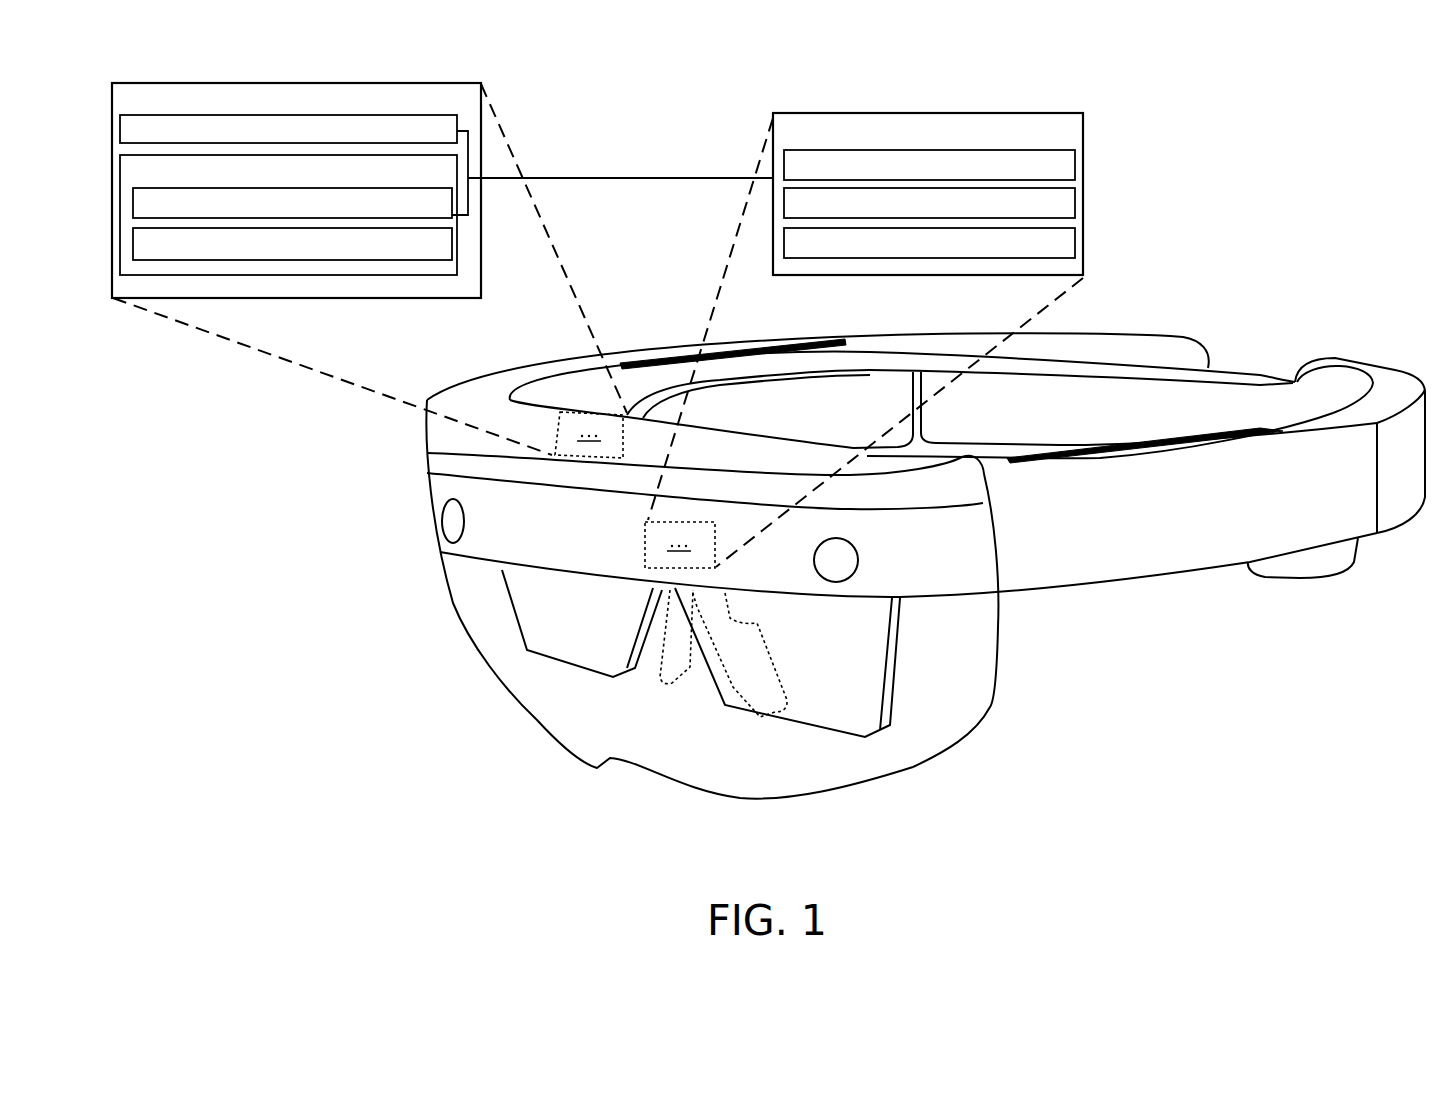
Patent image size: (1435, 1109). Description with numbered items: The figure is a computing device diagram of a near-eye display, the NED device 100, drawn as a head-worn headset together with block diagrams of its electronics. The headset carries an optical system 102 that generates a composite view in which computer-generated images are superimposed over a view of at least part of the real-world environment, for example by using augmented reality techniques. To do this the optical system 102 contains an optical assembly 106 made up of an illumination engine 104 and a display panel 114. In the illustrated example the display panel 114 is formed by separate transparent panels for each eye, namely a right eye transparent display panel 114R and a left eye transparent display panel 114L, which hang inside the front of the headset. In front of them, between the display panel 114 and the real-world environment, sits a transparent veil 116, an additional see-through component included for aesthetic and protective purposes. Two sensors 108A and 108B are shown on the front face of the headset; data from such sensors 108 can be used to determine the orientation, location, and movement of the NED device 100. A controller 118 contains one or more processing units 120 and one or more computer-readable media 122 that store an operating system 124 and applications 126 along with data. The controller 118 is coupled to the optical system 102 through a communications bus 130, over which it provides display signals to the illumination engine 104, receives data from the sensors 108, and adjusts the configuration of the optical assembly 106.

The NED device 100 is at (1258, 346).
The optical system 102 is at (928, 194).
The illumination engine 104 is at (929, 165).
The optical assembly 106 is at (929, 203).
The sensors 108 is at (929, 243).
The sensor 108A is at (448, 520).
The sensor 108B is at (850, 552).
The display panel 114 is at (762, 714).
The left eye transparent display panel 114L is at (840, 692).
The right eye transparent display panel 114R is at (575, 633).
The transparent veil 116 is at (472, 610).
The controller 118 is at (296, 190).
The processing units 120 is at (288, 129).
The computer-readable media 122 is at (288, 215).
The operating system 124 is at (292, 203).
The applications 126 is at (292, 244).
The bus 130 is at (660, 178).